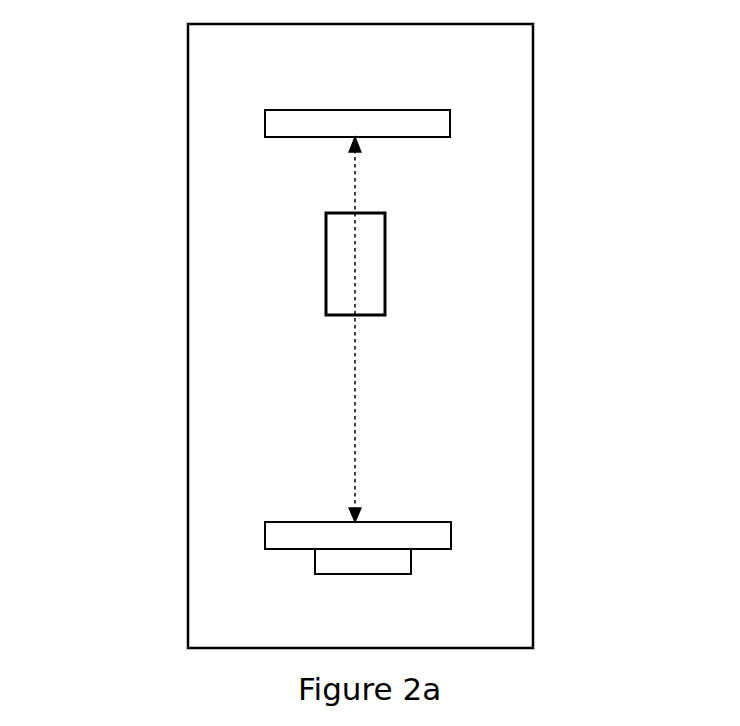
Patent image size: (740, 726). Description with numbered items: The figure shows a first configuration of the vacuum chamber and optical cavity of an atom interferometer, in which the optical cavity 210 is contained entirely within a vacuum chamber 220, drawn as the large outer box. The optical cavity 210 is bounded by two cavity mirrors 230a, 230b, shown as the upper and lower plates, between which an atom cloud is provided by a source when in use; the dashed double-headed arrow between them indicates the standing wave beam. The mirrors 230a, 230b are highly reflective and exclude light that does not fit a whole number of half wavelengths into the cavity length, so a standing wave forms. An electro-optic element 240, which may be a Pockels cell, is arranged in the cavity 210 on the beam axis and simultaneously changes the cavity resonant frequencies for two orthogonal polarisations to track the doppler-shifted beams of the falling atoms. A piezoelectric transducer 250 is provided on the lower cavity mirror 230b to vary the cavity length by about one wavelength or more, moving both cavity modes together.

The optical cavity 210 is at (300, 454).
The vacuum chamber 220 is at (533, 65).
The cavity mirror 230a is at (264, 120).
The cavity mirror 230b is at (451, 534).
The electro-optic element 240 is at (385, 246).
The piezoelectric transducer 250 is at (311, 565).